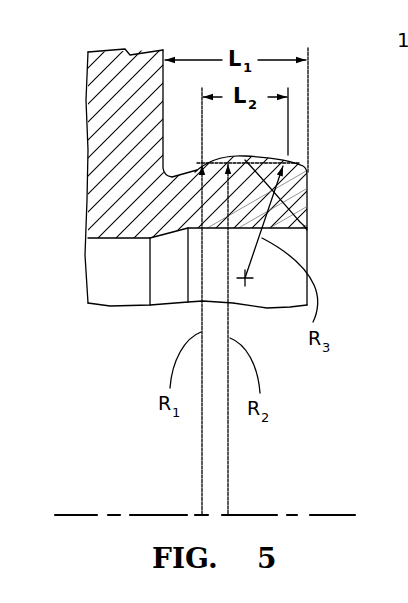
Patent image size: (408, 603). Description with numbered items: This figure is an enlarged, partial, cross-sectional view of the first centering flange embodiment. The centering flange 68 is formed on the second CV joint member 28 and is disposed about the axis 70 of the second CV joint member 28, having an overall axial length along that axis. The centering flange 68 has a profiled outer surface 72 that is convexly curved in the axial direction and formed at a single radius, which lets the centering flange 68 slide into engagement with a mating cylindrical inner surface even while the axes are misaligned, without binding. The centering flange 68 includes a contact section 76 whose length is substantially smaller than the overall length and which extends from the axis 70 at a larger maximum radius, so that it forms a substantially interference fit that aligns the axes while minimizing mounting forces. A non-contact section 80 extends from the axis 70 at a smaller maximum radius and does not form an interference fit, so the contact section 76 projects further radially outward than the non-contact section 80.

The second CV joint member 28 is at (130, 60).
The centering flange 68 is at (310, 191).
The axis 70 is at (143, 513).
The profiled outer surface 72 is at (192, 160).
The contact section 76 is at (309, 229).
The non-contact section 80 is at (195, 177).